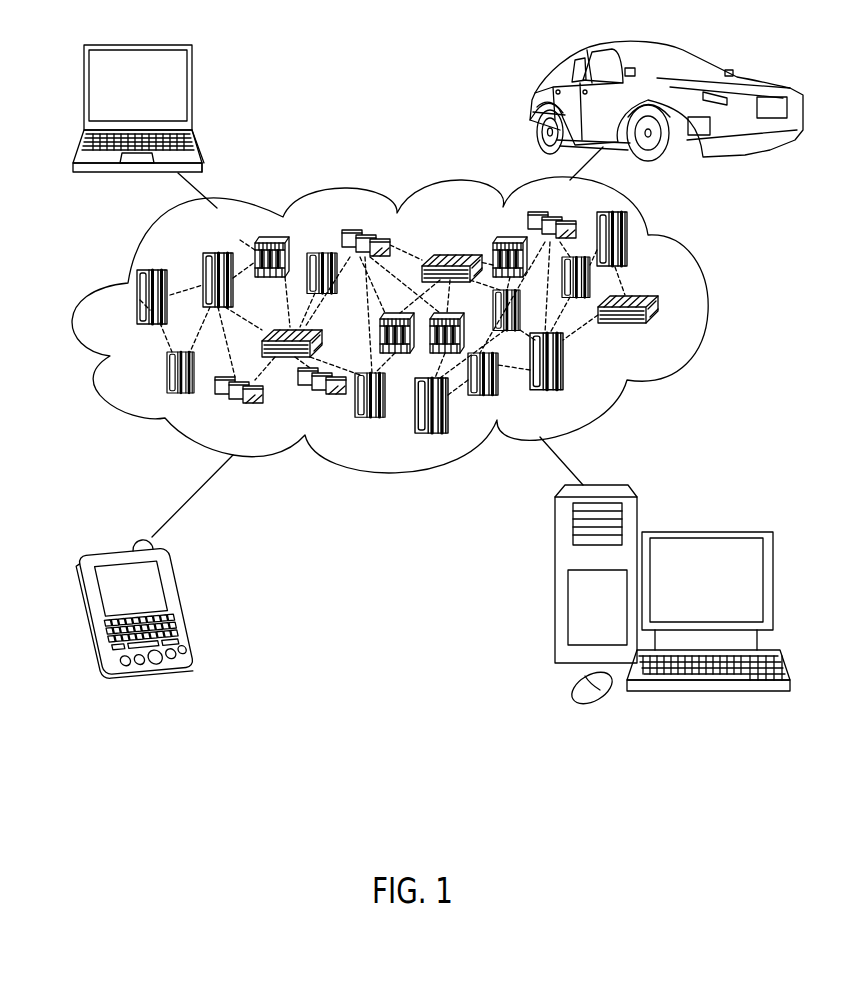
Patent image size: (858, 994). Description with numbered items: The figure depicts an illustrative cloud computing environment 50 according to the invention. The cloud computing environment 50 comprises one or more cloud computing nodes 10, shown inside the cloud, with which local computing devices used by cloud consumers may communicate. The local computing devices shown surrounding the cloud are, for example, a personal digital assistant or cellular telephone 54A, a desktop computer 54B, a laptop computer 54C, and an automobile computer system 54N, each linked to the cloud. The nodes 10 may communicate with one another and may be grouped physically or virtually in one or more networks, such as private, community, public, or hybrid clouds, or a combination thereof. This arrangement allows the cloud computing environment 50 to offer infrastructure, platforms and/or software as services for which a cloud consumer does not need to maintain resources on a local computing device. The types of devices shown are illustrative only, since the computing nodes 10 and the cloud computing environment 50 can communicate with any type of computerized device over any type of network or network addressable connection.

The cloud computing node 10 is at (666, 330).
The cloud computing environment 50 is at (702, 302).
The personal digital assistant or cellular telephone 54A is at (182, 604).
The desktop computer 54B is at (706, 531).
The laptop computer 54C is at (193, 92).
The automobile computer system 54N is at (533, 105).